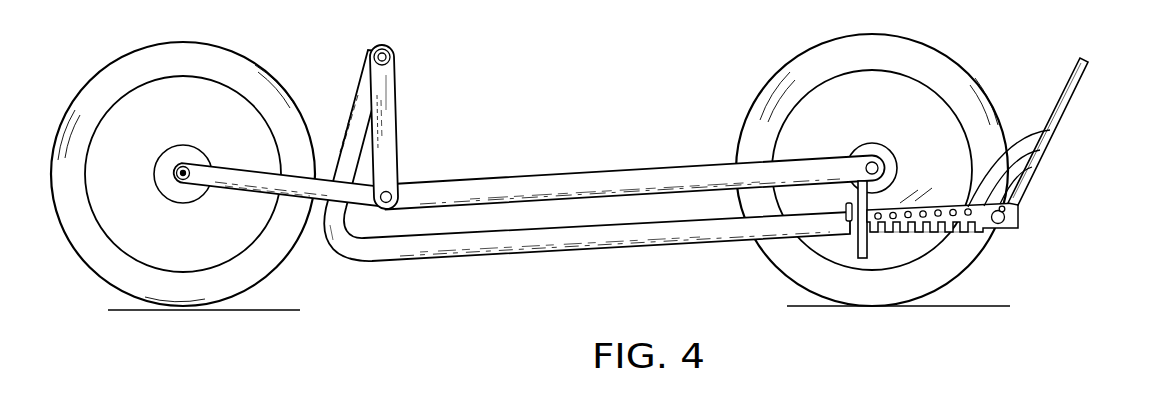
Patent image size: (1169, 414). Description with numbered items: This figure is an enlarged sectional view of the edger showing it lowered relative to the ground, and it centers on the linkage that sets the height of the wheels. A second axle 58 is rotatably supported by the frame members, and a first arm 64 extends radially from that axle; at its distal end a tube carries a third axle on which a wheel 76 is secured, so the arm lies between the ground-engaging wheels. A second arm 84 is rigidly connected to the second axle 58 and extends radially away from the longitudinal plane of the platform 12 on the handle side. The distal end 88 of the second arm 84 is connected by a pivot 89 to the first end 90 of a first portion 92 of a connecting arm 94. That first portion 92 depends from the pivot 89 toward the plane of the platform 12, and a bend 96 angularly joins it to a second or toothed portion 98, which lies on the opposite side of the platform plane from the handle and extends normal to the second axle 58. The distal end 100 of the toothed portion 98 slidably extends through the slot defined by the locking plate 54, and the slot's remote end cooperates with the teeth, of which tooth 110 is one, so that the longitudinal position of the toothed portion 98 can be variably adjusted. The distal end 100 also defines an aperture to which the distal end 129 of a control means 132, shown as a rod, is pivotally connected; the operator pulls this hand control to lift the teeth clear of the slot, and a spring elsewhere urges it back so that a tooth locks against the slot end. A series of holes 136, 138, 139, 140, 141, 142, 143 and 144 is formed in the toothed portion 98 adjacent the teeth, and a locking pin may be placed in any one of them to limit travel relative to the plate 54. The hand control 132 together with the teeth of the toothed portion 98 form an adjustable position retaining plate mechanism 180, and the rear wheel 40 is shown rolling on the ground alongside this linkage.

The platform 12 is at (569, 180).
The rear wheel 40 is at (922, 60).
The locking plate 54 is at (857, 247).
The second axle 58 is at (390, 185).
The first arm 64 is at (251, 178).
The wheel 76 is at (147, 62).
The second arm 84 is at (385, 117).
The distal end of second arm 88 is at (387, 92).
The pivot 89 is at (390, 55).
The first end of first portion 90 is at (365, 77).
The first portion 92 is at (360, 117).
The connecting arm 94 is at (344, 264).
The bend 96 is at (333, 247).
The second or toothed portion 98 is at (587, 238).
The distal end of second portion 100 is at (967, 208).
The tooth 110 is at (980, 229).
The distal end of control means 129 is at (1020, 204).
The control means 132 is at (1088, 70).
The hole 136 is at (855, 252).
The hole 138 is at (943, 192).
The hole 139 is at (945, 190).
The hole 140 is at (952, 190).
The hole 141 is at (920, 237).
The hole 142 is at (1050, 130).
The hole 143 is at (1040, 150).
The hole 144 is at (1032, 167).
The adjustable position retaining plate mechanism 180 is at (940, 254).